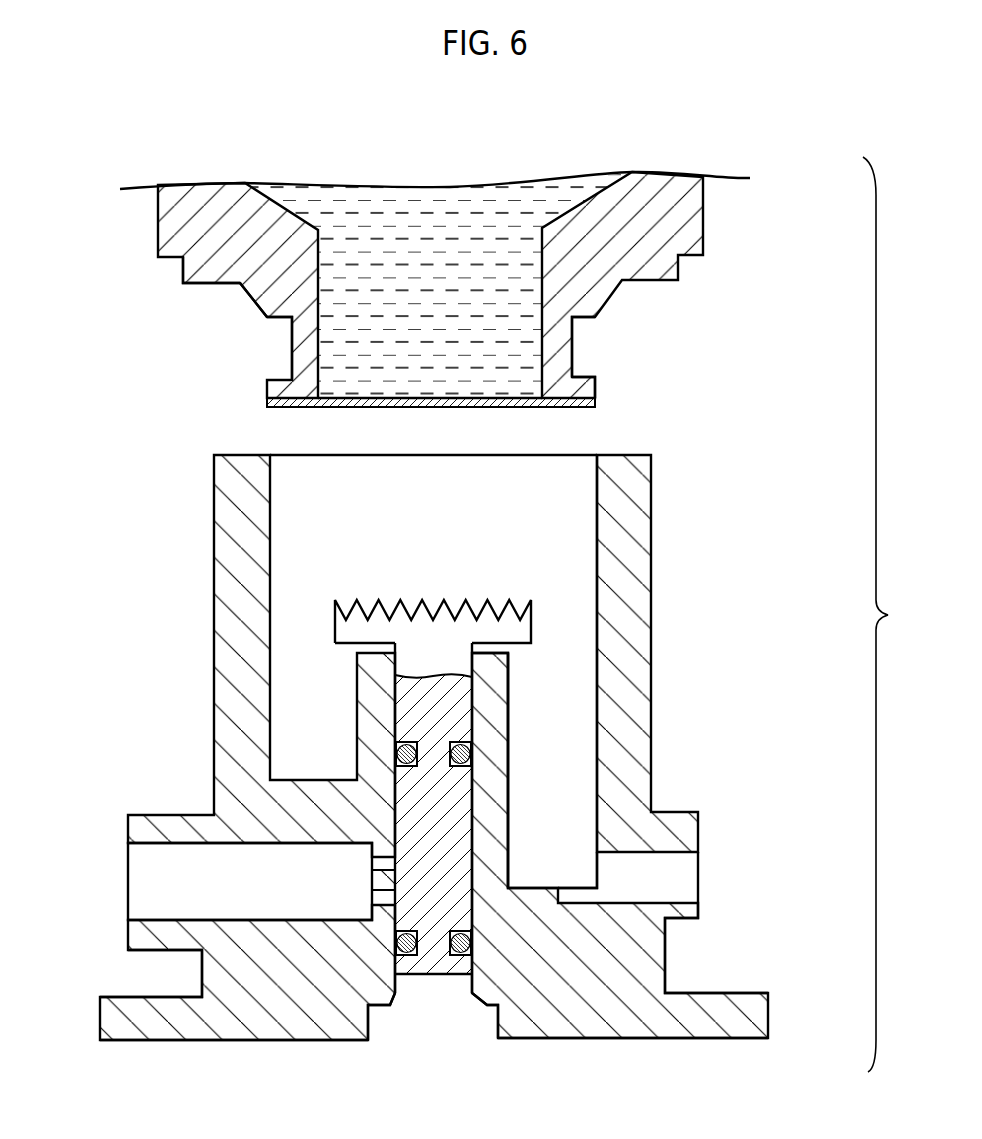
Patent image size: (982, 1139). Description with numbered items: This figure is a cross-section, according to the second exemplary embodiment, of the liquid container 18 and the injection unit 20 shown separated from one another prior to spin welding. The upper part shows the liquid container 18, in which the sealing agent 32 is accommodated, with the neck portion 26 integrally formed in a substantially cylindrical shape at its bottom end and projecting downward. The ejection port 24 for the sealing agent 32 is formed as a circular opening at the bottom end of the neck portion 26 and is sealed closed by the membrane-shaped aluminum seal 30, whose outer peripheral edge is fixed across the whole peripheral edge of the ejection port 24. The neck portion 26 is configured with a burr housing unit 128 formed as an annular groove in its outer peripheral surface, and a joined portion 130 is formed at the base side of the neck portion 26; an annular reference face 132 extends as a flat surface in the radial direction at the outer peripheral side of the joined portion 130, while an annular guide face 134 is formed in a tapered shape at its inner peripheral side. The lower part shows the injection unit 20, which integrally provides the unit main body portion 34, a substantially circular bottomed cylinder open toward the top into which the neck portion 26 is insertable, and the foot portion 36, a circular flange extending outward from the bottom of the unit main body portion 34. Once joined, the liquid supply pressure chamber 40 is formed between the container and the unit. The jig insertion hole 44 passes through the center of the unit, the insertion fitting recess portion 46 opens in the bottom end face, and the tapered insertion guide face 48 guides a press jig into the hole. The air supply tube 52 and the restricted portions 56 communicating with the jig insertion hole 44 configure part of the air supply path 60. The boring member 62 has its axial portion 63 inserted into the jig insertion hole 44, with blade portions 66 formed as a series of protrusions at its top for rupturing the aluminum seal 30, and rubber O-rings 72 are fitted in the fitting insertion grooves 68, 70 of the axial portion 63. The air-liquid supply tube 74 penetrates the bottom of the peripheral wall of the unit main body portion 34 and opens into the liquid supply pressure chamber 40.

The liquid container 18 is at (718, 222).
The injection unit 20 is at (748, 882).
The ejection port 24 is at (532, 388).
The neck portion 26 is at (595, 383).
The aluminum seal 30 is at (350, 405).
The sealing agent 32 is at (516, 200).
The unit main body portion 34 is at (652, 777).
The foot portion 36 is at (100, 1042).
The liquid supply pressure chamber 40 is at (552, 804).
The jig insertion hole 44 is at (470, 690).
The insertion fitting recess portion 46 is at (372, 1004).
The insertion guide face 48 is at (497, 1005).
The air supply tube 52 is at (162, 955).
The restricted portions 56 is at (392, 898).
The air supply path 60 is at (207, 899).
The boring member 62 is at (428, 975).
The axial portion 63 is at (480, 865).
The blade portions 66 is at (365, 598).
The fitting insertion groove 68 is at (472, 752).
The fitting insertion groove 70 is at (473, 943).
The rubber O-rings 72 is at (397, 752).
The air-liquid supply tube 74 is at (680, 920).
The burr housing unit 128 is at (573, 347).
The joined portion 130 is at (255, 319).
The reference face 132 is at (197, 283).
The guide face 134 is at (248, 298).